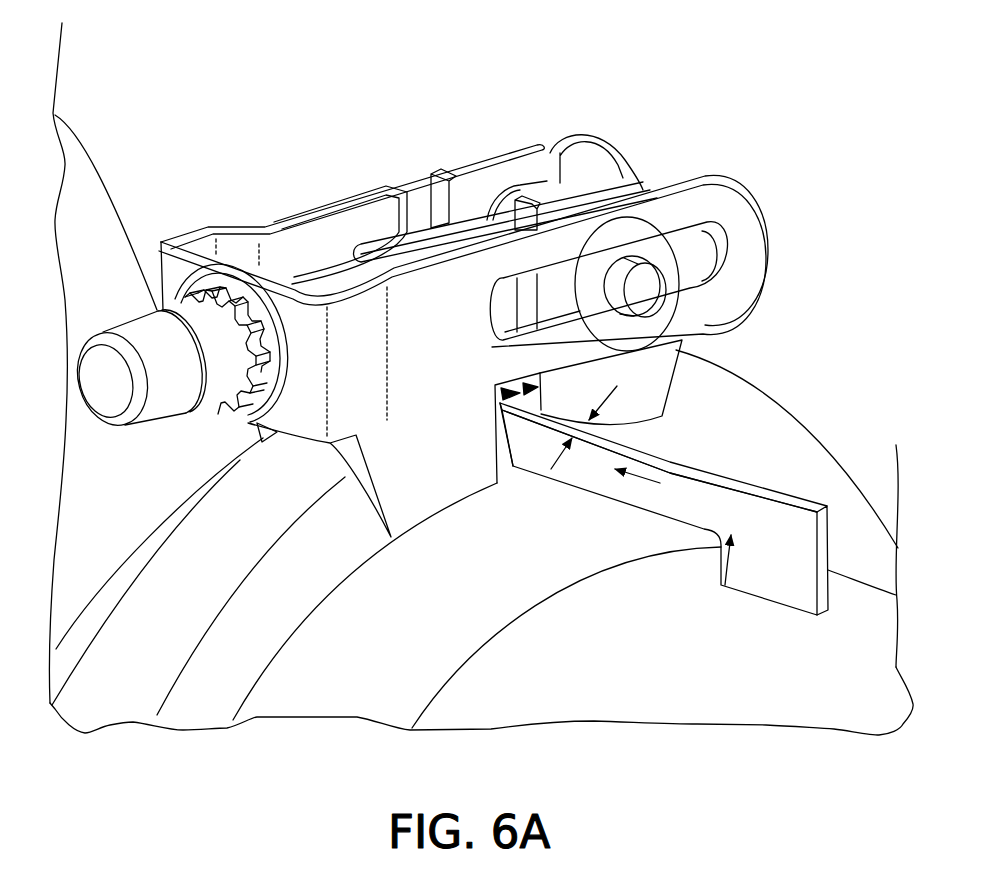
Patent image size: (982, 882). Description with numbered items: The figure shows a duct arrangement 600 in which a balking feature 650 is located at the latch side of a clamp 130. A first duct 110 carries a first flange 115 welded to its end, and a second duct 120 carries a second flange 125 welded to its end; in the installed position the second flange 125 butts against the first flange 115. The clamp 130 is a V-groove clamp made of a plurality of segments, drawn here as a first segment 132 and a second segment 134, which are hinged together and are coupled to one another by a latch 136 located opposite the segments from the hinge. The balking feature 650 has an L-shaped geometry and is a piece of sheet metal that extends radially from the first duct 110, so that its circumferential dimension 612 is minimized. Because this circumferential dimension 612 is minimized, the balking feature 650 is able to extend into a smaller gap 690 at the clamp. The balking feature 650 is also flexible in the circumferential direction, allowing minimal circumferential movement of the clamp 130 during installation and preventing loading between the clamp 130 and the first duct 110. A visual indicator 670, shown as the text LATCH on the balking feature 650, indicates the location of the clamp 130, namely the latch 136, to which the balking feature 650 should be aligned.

The duct arrangement 600 is at (780, 120).
The latch 136 is at (324, 178).
The gap 690 is at (529, 386).
The second segment 134 is at (769, 423).
The circumferential dimension 612 is at (619, 426).
The balking feature 650 is at (792, 580).
The visual indicator 670 is at (725, 587).
The second duct 120 is at (103, 516).
The second flange 125 is at (80, 630).
The first segment 132 is at (217, 520).
The clamp 130 is at (175, 695).
The first flange 115 is at (327, 702).
The first duct 110 is at (777, 703).